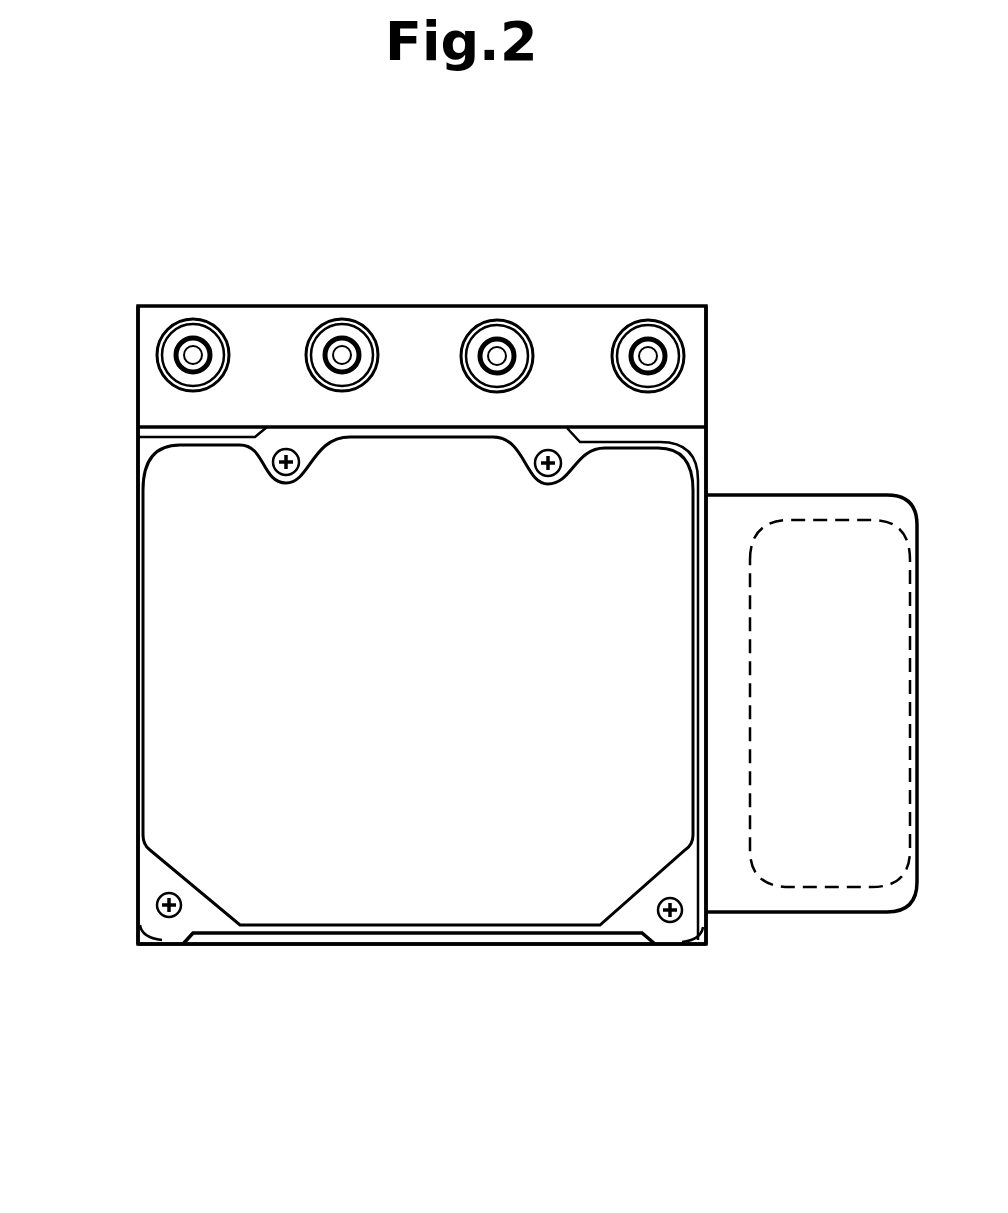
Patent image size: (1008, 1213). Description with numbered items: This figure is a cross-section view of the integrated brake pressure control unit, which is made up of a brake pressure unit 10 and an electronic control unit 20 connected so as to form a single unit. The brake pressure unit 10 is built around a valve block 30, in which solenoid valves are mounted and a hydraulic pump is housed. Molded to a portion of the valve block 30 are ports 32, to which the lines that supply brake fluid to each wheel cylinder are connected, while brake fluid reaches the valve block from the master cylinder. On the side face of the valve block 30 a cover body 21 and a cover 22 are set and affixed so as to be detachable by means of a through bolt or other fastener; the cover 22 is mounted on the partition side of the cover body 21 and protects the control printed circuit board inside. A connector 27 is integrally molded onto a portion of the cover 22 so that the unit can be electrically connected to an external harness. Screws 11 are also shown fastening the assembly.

The brake pressure unit 10 is at (712, 300).
The electronic control unit 20 is at (128, 867).
The valve block 30 is at (698, 402).
The ports 32 is at (648, 355).
The screws 11 is at (168, 918).
The cover 22 is at (568, 915).
The cover body 21 is at (333, 936).
The connector 27 is at (840, 522).